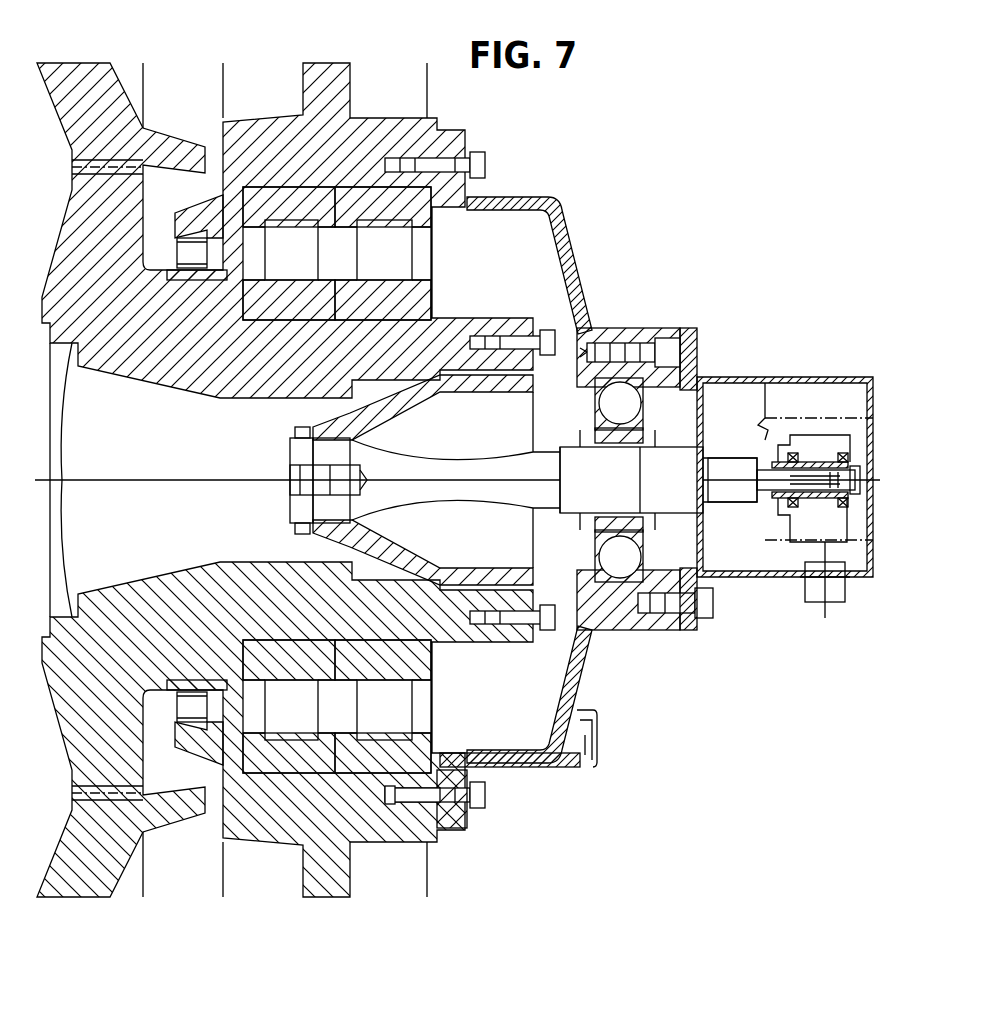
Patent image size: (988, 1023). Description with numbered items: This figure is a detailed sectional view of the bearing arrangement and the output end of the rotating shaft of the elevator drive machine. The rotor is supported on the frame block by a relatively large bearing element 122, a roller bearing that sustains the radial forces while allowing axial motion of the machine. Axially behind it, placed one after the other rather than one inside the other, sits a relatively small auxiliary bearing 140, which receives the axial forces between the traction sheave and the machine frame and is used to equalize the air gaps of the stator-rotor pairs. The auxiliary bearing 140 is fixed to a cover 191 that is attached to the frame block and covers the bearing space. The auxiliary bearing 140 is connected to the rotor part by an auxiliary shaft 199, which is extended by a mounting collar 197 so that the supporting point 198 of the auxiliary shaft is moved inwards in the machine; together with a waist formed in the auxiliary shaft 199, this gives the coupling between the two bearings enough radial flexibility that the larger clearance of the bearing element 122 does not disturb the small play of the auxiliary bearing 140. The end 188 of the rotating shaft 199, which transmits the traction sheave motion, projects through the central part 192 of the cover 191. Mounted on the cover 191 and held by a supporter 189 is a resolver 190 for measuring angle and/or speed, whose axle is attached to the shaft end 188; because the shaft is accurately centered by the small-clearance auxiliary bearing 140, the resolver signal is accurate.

The bearing element 122 is at (418, 755).
The auxiliary bearing 140 is at (612, 368).
The end of the rotating shaft 188 is at (743, 465).
The supporter 189 is at (866, 555).
The resolver 190 is at (805, 507).
The cover 191 is at (580, 277).
The central part of the cover 192 is at (693, 328).
The mounting collar 197 is at (337, 538).
The supporting point 198 is at (290, 456).
The auxiliary shaft 199 is at (578, 573).